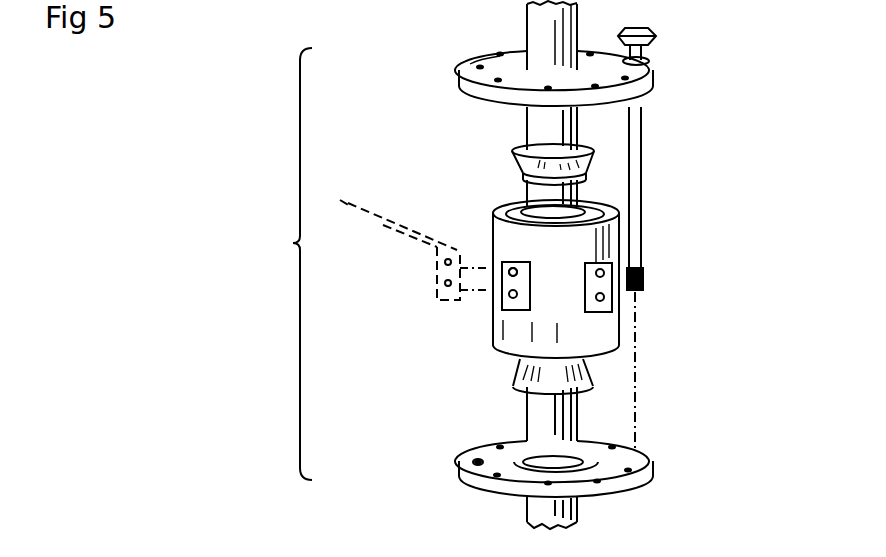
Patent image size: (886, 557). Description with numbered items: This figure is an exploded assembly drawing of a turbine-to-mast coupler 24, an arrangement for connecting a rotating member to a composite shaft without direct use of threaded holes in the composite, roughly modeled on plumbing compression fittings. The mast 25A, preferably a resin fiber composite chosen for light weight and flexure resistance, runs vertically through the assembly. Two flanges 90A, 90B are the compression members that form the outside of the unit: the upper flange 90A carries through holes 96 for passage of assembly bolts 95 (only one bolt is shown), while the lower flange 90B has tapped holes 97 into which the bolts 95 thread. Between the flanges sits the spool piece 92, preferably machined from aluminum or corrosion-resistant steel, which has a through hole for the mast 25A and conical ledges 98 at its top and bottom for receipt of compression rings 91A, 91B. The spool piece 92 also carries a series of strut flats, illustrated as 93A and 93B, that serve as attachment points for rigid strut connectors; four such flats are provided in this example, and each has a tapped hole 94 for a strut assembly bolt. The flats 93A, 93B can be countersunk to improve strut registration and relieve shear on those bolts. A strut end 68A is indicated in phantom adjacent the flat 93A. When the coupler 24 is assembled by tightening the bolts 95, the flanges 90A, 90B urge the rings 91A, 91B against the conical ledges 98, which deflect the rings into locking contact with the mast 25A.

The coupler 24 is at (281, 264).
The mast 25A is at (533, 30).
The flange 90A is at (643, 88).
The flange 90B is at (643, 480).
The compression ring 91A is at (590, 150).
The compression ring 91B is at (587, 387).
The spool piece 92 is at (572, 254).
The strut flat 93A is at (517, 312).
The strut flat 93B is at (607, 291).
The tapped hole 94 is at (503, 264).
The assembly bolt 95 is at (647, 32).
The through hole 96 is at (463, 60).
The tapped hole 97 is at (477, 460).
The conical ledge 98 is at (583, 212).
The connector fitting (phantom) 68A is at (437, 294).